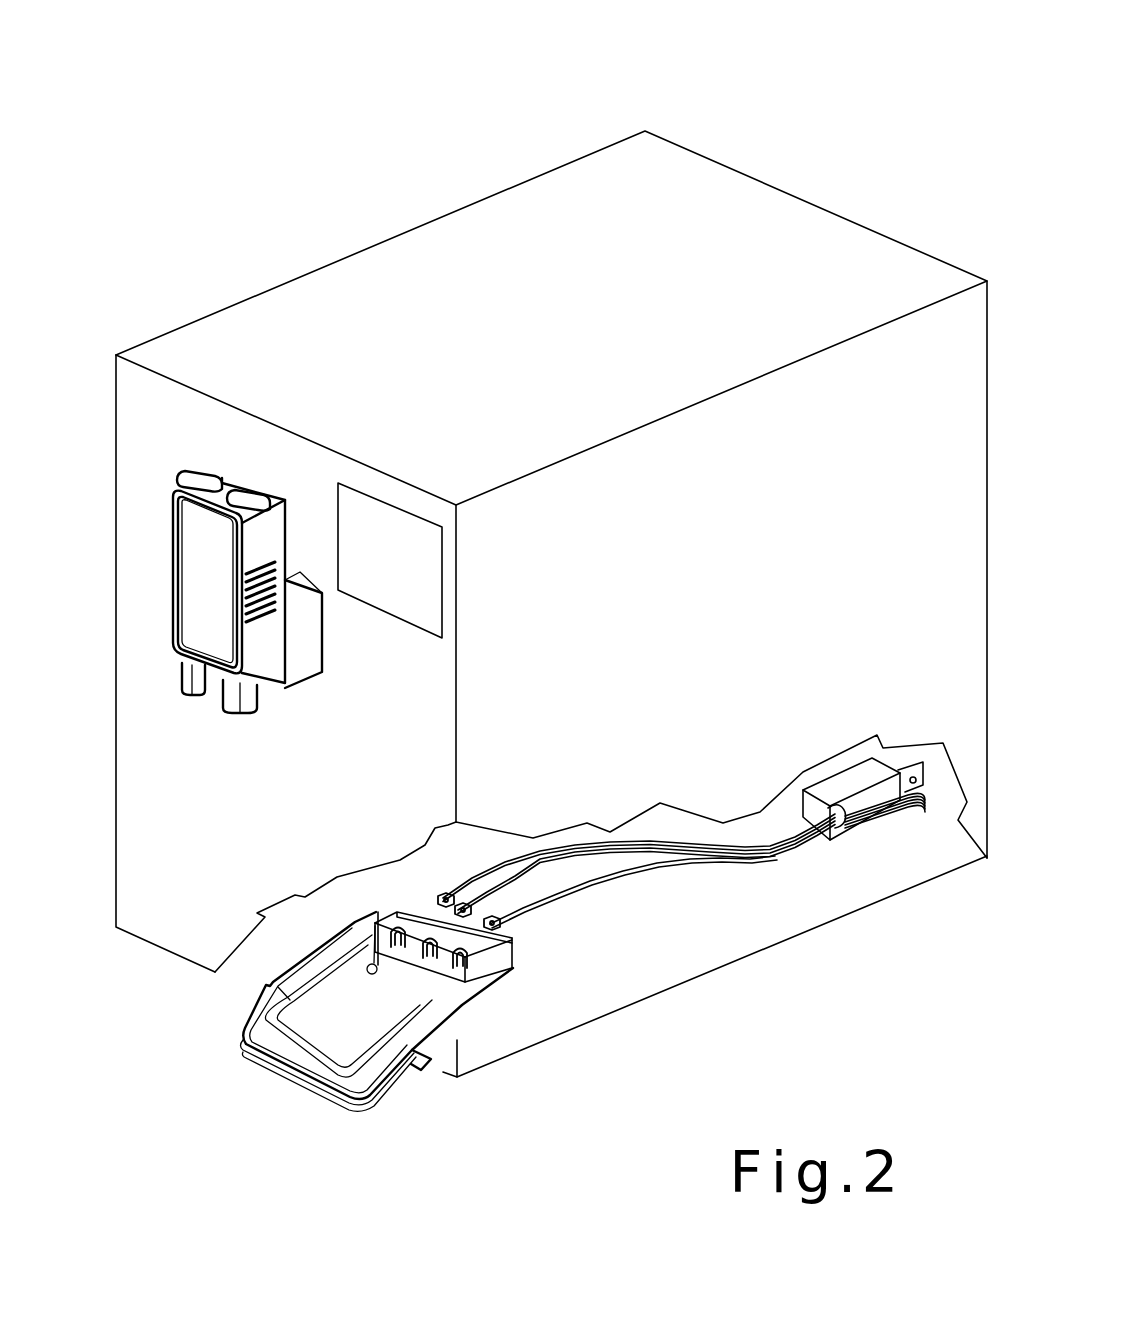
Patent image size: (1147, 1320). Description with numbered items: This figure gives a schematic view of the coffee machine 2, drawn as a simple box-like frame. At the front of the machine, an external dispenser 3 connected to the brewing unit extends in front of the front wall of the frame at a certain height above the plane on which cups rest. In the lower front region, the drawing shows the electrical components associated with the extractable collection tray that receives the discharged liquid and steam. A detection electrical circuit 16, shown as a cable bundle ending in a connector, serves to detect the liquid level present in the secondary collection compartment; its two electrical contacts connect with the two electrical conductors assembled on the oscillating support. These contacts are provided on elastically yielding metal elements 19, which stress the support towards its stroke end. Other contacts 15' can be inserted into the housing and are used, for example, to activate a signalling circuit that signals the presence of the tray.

The coffee machine 2 is at (513, 160).
The external dispenser 3 is at (207, 698).
The other contacts 15' is at (377, 965).
The detection electrical circuit 16 is at (744, 836).
The elastically yielding metal elements 19 is at (447, 973).